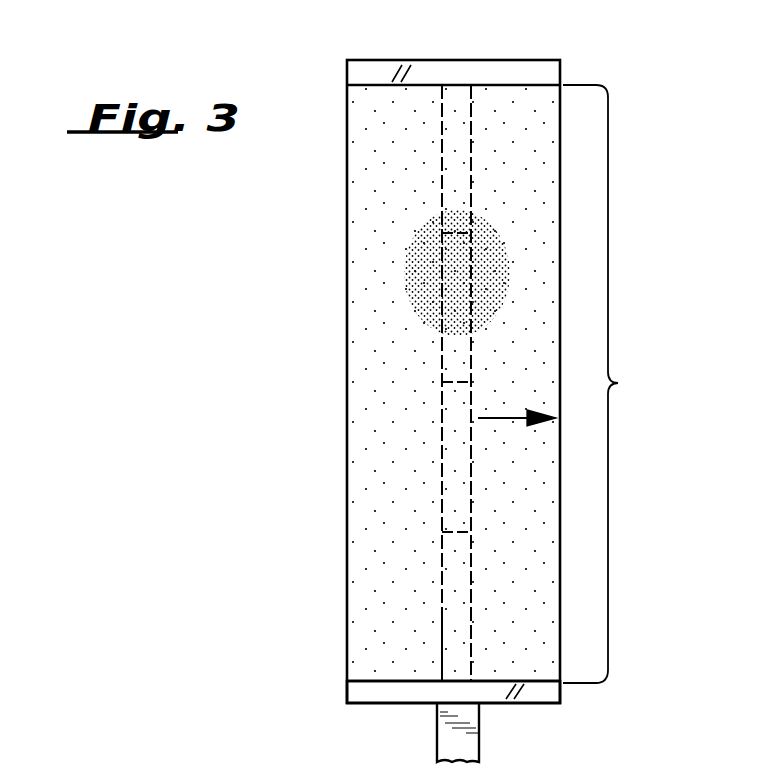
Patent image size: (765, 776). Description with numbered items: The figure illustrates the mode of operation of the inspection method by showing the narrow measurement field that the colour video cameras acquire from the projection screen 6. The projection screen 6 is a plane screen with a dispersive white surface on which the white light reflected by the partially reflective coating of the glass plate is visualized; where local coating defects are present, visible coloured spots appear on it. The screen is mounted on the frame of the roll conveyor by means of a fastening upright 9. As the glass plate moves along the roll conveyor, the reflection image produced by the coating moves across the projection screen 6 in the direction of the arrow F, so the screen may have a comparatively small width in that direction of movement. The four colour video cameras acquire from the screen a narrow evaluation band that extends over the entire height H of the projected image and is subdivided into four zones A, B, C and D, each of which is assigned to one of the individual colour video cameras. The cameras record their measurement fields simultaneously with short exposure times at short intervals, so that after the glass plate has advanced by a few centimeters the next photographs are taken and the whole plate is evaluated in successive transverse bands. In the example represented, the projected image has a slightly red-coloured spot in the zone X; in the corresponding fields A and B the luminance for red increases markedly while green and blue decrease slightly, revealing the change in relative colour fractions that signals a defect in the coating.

The zone A is at (452, 157).
The zone B is at (447, 353).
The zone C is at (453, 458).
The zone D is at (452, 598).
The zone X is at (395, 266).
The arrow F is at (517, 404).
The height H is at (604, 384).
The projection screen 6 is at (381, 692).
The fastening upright 9 is at (447, 742).